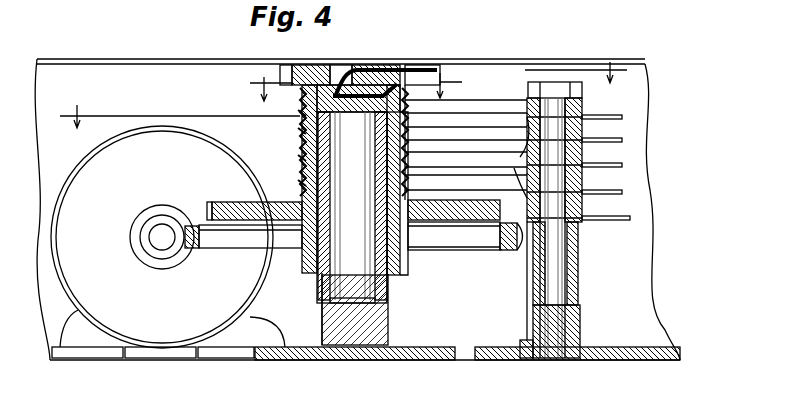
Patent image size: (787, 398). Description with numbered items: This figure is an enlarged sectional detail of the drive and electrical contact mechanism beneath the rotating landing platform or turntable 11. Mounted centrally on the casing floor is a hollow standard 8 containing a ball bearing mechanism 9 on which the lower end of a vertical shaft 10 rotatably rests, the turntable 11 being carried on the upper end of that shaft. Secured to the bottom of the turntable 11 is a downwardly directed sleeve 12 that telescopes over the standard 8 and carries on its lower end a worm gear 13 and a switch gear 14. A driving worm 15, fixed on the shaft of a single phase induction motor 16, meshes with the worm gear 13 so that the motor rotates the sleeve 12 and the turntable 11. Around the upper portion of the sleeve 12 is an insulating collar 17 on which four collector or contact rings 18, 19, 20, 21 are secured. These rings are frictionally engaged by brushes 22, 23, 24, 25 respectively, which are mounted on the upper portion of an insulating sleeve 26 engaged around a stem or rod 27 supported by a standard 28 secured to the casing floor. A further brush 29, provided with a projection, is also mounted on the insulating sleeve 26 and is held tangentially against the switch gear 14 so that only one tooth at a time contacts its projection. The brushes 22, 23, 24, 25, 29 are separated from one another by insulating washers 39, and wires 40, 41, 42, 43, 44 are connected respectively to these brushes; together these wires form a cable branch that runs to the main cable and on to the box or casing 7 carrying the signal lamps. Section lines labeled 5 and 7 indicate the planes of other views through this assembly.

The section line 5- 5 is at (353, 87).
The box or casing 7 is at (343, 108).
The hollow standard 8 is at (374, 336).
The ball bearing mechanism 9 is at (372, 301).
The vertical shaft 10 is at (342, 294).
The landing platform or turntable 11 is at (142, 50).
The sleeve 12 is at (395, 275).
The worm gear 13 is at (502, 245).
The switch gear 14 is at (475, 208).
The driving worm 15 is at (172, 258).
The single phase induction motor 16 is at (162, 237).
The insulating collar 17 is at (300, 97).
The contact ring 18 is at (300, 114).
The contact ring 19 is at (300, 132).
The contact ring 20 is at (302, 160).
The contact ring 21 is at (304, 184).
The brush 22 is at (466, 142).
The brush 23 is at (466, 132).
The brush 24 is at (466, 158).
The brush 25 is at (466, 182).
The insulating sleeve 26 is at (578, 264).
The stem or rod 27 is at (557, 295).
The standard 28 is at (580, 322).
The brush 29 is at (523, 240).
The insulating washers 39 is at (512, 157).
The wire 40 is at (600, 118).
The wire 41 is at (605, 140).
The wire 42 is at (615, 158).
The wire 43 is at (615, 187).
The wire 44 is at (620, 216).